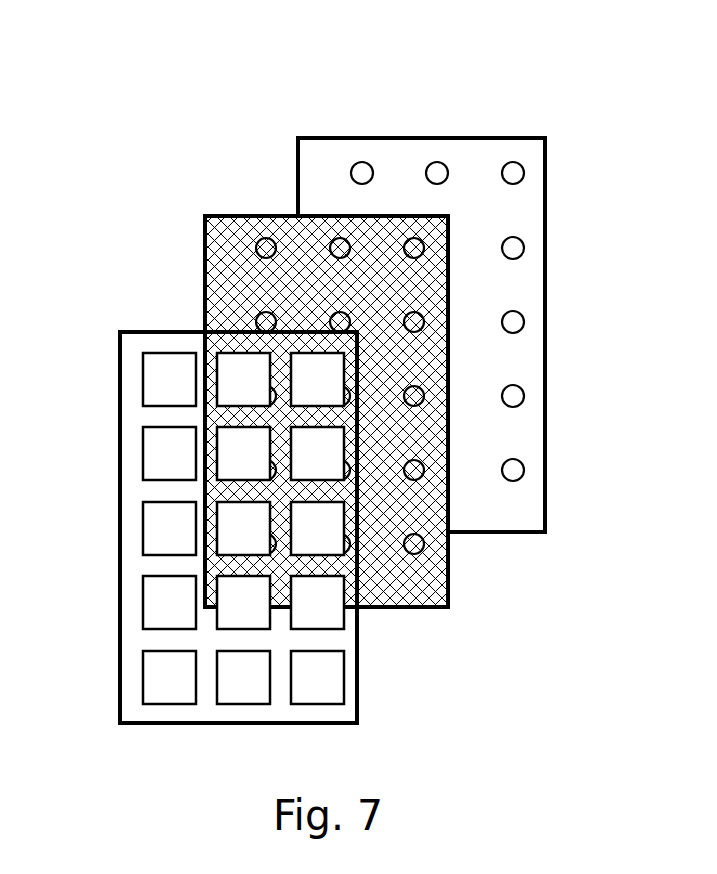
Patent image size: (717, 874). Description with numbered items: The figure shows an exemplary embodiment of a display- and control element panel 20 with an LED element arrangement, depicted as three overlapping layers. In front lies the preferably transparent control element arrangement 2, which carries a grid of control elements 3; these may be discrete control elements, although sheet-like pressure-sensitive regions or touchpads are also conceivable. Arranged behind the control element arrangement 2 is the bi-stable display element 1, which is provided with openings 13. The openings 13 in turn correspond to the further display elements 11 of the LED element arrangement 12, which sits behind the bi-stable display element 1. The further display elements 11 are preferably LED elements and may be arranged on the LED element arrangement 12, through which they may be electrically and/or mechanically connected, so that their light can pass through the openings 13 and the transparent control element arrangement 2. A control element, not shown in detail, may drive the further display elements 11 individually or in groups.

The composite structure / assembly 20 is at (165, 100).
The LED element arrangement 12 is at (471, 279).
The further display elements 11 is at (362, 162).
The bi-stable display element 1 is at (314, 413).
The openings 13 is at (424, 396).
The control element arrangement 2 is at (187, 570).
The control elements 3 is at (317, 704).